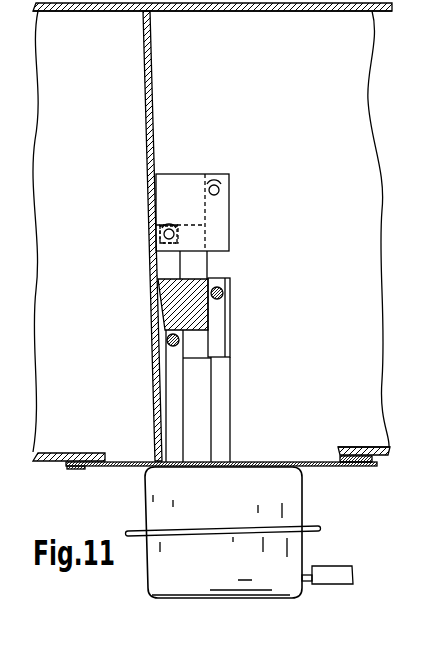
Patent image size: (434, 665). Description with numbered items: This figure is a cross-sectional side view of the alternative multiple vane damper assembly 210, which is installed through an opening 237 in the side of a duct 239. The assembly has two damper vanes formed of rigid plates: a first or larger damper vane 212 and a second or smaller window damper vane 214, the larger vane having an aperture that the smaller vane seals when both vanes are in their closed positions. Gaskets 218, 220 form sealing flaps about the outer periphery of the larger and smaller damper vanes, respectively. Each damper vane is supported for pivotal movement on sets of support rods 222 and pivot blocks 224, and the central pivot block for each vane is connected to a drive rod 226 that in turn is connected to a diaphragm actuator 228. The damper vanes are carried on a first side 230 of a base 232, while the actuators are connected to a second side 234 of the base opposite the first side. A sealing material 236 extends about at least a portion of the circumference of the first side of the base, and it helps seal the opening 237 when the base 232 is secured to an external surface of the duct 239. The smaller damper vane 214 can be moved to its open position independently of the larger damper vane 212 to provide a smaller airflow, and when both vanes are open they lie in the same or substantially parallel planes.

The multiple vane damper assembly 210 is at (304, 90).
The first or larger damper vane 212 is at (146, 107).
The second or smaller window damper vane 214 is at (153, 343).
The gasket 218 is at (151, 17).
The gasket 220 is at (153, 236).
The support rods 222 is at (166, 389).
The pivot blocks 224 is at (186, 185).
The drive rod 226 is at (220, 379).
The diaphragm actuator 228 is at (278, 553).
The first side of the base 230 is at (249, 461).
The base 232 is at (332, 467).
The second side of the base 234 is at (114, 467).
The sealing material 236 is at (82, 468).
The opening 237 is at (338, 447).
The duct 239 is at (88, 11).